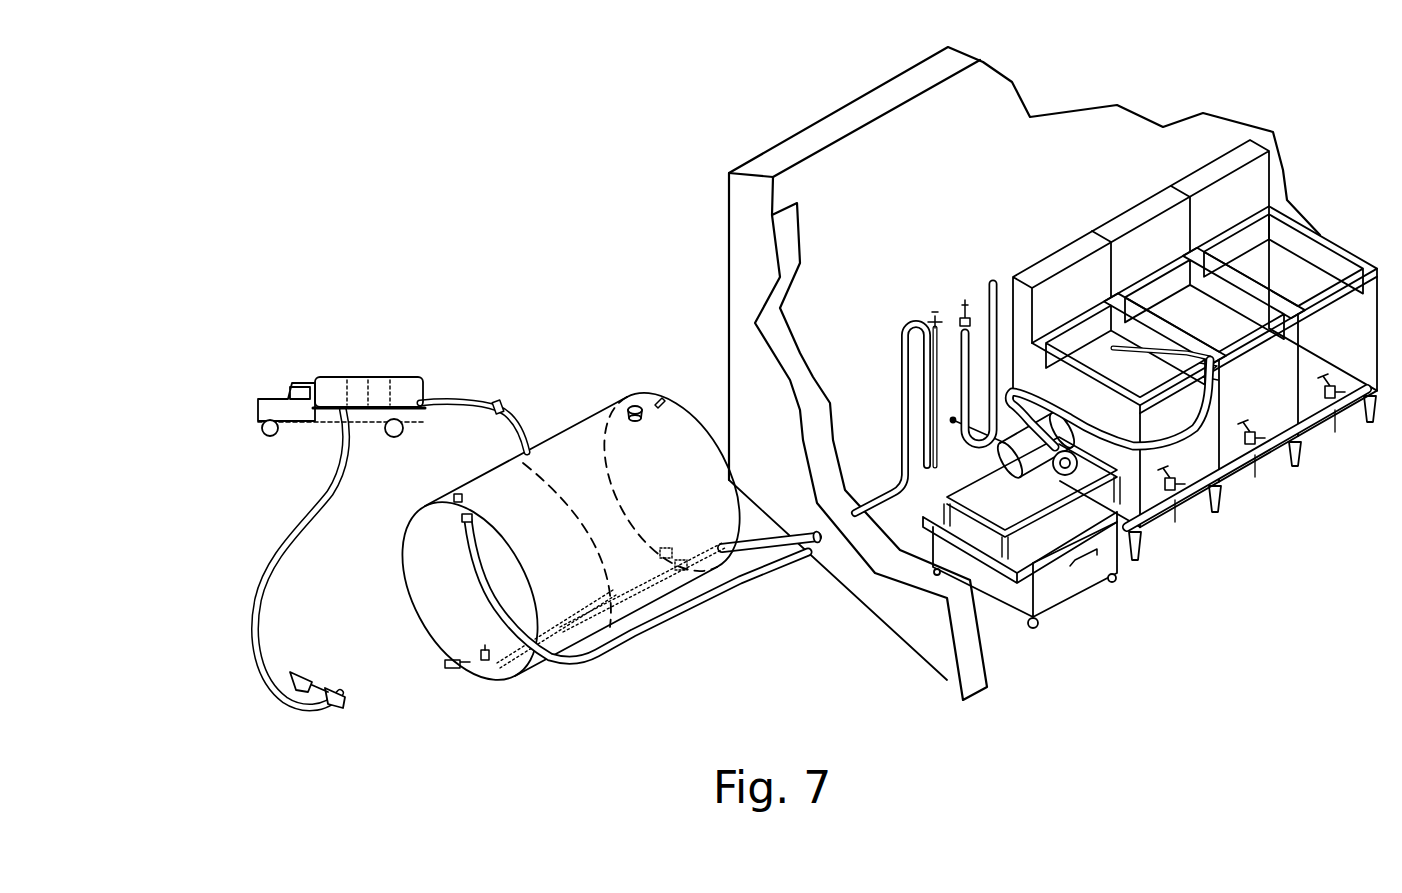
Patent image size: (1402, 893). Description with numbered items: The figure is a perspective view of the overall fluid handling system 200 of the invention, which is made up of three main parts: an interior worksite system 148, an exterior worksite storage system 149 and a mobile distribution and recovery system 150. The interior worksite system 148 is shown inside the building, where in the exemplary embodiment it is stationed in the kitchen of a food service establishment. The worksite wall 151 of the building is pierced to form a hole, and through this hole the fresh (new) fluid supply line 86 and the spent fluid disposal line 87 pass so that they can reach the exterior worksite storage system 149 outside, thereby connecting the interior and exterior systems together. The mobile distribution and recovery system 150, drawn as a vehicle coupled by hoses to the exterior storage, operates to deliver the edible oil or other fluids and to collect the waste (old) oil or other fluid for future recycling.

The system 200 is at (152, 760).
The mobile distribution and recovery system 150 is at (375, 356).
The exterior worksite storage system 149 is at (535, 686).
The worksite wall 151 is at (845, 573).
The fresh fluid supply line 86 is at (800, 530).
The spent fluid disposal line 87 is at (710, 612).
The interior worksite system 148 is at (1175, 568).